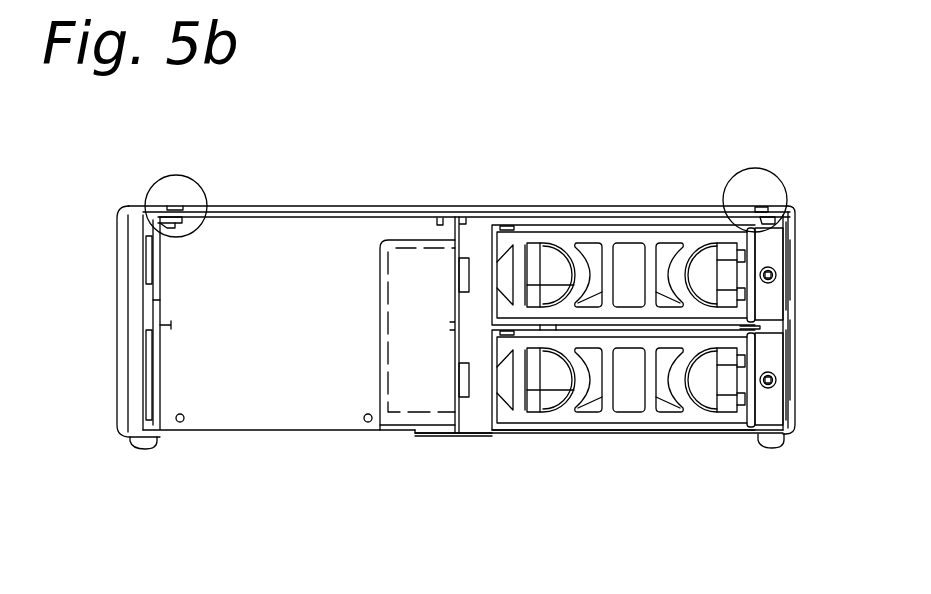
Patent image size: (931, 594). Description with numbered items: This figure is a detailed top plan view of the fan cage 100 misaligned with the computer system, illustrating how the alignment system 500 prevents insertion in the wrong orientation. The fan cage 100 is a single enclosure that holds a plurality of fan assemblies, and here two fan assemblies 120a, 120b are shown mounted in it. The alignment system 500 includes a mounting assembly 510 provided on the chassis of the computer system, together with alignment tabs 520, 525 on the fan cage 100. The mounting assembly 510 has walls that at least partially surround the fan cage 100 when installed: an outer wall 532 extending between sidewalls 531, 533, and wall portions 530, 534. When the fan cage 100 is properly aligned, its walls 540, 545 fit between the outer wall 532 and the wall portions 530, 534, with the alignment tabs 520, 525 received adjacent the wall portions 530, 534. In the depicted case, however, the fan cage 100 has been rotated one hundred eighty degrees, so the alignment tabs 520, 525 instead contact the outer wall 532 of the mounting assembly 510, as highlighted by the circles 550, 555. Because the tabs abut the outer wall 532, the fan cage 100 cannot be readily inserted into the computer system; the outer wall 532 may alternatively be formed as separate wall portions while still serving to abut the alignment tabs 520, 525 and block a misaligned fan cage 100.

The fan cage 100 is at (533, 175).
The fan assembly 120a is at (618, 220).
The fan assembly 120b is at (633, 435).
The alignment system 500 is at (438, 488).
The mounting assembly 510 is at (798, 209).
The alignment tab 520 is at (765, 207).
The alignment tab 525 is at (165, 195).
The wall portion 530 is at (136, 449).
The sidewall 531 is at (118, 345).
The outer wall 532 is at (345, 208).
The sidewall 533 is at (796, 308).
The wall portion 534 is at (775, 448).
The wall of fan cage 540 is at (505, 433).
The wall of fan cage 545 is at (498, 212).
The circle 550 is at (186, 175).
The circle 555 is at (777, 175).